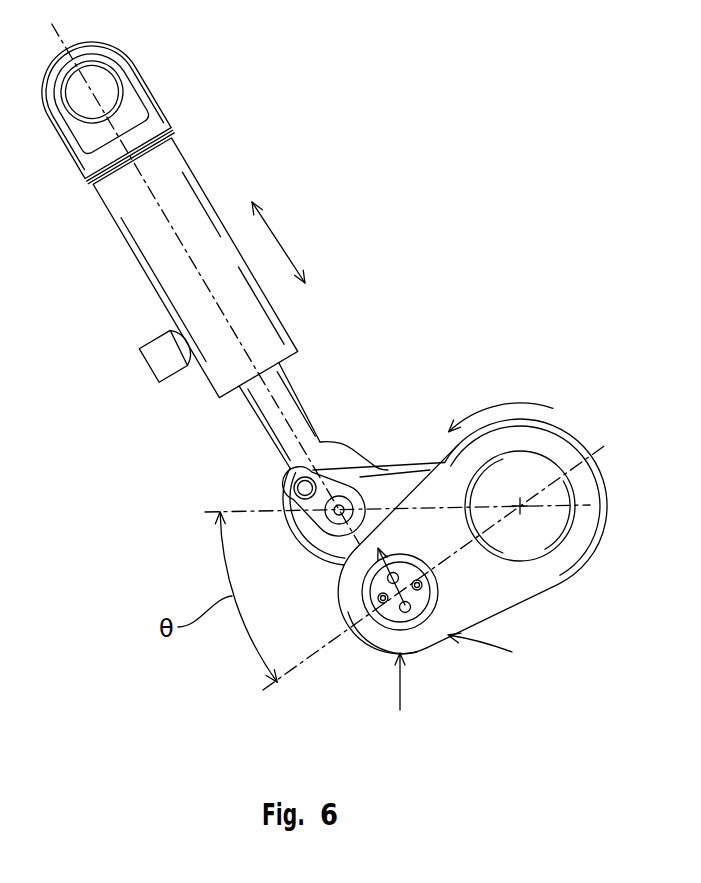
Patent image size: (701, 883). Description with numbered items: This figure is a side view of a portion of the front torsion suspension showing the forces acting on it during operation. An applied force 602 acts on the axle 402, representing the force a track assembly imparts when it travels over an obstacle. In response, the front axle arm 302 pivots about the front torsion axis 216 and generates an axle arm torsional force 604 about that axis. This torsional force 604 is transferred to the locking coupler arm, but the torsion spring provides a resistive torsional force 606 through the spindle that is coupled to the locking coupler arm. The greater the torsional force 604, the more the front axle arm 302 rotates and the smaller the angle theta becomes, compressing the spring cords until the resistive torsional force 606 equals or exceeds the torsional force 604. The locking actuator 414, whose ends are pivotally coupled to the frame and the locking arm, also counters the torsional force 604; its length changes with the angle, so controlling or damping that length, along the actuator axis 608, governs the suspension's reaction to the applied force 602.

The locking actuator 414 is at (170, 158).
The actuator axis 608 is at (172, 240).
The front axle arm 302 is at (481, 587).
The front torsion axis 216 is at (596, 551).
The axle 402 is at (378, 588).
The applied force 602 is at (398, 688).
The axle arm torsional force 604 is at (481, 648).
The resistive torsional force 606 is at (497, 404).